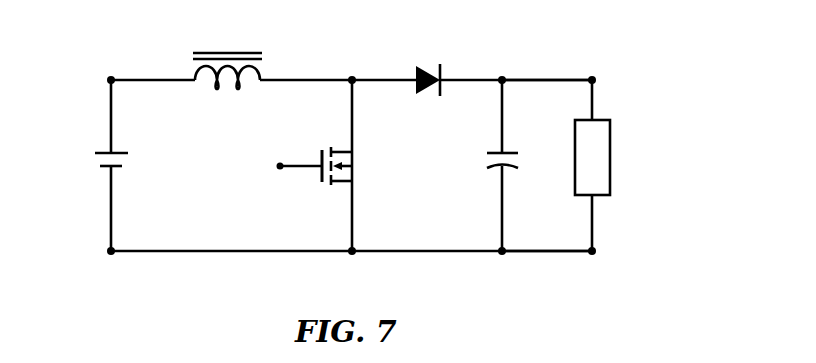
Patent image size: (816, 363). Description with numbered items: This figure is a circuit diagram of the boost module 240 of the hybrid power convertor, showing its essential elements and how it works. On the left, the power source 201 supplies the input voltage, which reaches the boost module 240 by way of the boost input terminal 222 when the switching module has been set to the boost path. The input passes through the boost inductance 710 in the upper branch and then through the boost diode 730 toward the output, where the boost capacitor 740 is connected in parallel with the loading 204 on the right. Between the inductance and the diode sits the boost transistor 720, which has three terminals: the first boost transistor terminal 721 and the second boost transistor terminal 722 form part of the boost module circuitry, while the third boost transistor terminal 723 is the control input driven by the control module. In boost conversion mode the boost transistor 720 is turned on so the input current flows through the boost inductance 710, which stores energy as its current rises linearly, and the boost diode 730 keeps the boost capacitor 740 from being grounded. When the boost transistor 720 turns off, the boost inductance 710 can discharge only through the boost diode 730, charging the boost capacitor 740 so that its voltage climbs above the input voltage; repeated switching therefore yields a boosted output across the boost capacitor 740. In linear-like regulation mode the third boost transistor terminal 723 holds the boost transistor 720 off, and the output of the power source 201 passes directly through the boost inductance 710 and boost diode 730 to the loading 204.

The power source 201 is at (93, 145).
The loading 204 is at (612, 122).
The boost input terminal 222 is at (153, 79).
The boost module 240 is at (628, 48).
The boost inductance 710 is at (274, 62).
The boost transistor 720 is at (311, 191).
The first boost transistor terminal 721 is at (352, 115).
The second boost transistor terminal 722 is at (353, 209).
The third boost transistor terminal 723 is at (278, 166).
The boost diode 730 is at (428, 103).
The boost capacitor 740 is at (494, 177).